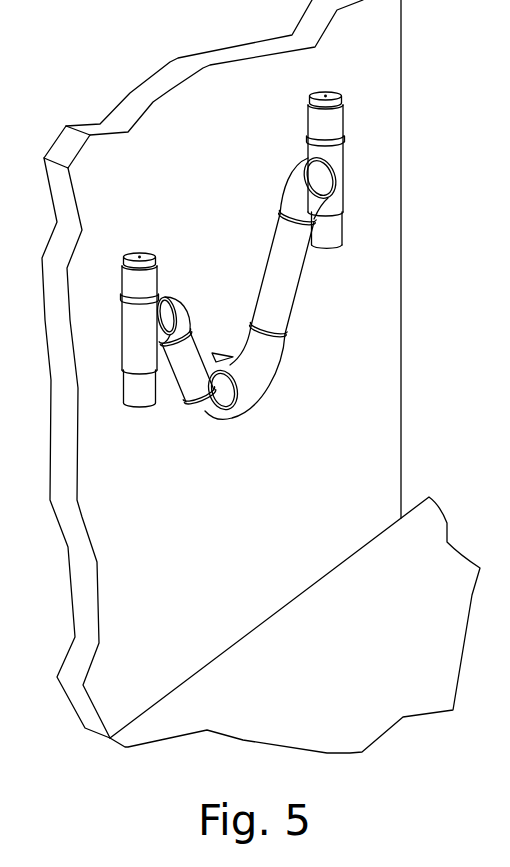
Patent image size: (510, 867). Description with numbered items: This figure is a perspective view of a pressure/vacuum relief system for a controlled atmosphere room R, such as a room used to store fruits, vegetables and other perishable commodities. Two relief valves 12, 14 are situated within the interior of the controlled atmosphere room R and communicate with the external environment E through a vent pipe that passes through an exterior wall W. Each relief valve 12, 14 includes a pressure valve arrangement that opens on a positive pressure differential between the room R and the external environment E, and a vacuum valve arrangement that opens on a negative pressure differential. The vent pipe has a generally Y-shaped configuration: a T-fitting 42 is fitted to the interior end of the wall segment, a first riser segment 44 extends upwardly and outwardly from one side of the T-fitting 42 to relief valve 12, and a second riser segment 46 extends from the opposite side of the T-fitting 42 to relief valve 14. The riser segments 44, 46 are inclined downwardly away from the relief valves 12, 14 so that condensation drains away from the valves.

The relief valve 12 is at (132, 340).
The relief valve 14 is at (343, 136).
The T-fitting 42 is at (255, 385).
The first riser segment 44 is at (190, 378).
The second riser segment 46 is at (286, 297).
The exterior wall W is at (68, 519).
The external environment E is at (37, 359).
The controlled atmosphere room R is at (381, 347).